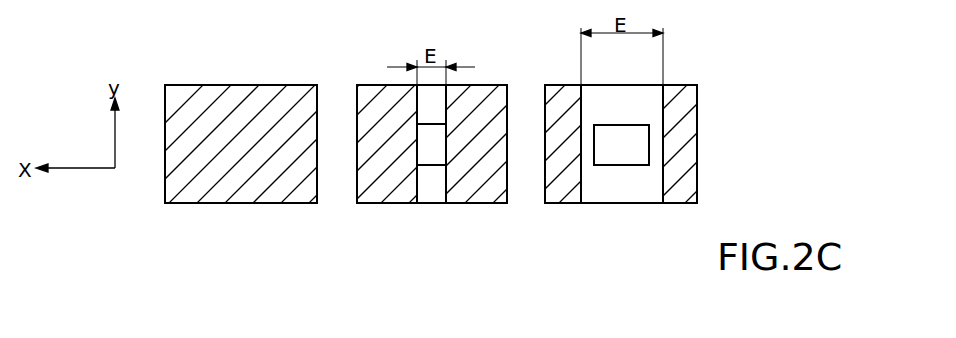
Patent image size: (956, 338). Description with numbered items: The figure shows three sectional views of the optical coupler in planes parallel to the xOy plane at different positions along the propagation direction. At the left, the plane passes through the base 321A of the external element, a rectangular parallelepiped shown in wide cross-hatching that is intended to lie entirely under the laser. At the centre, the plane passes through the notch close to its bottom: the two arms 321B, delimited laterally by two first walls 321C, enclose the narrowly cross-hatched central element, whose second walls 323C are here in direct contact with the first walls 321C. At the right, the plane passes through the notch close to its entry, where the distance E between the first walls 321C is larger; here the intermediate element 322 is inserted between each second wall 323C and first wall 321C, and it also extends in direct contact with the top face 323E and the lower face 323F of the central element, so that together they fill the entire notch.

The base 321A is at (223, 192).
The arms 321B is at (375, 92).
The first walls 321C is at (450, 181).
The intermediate element 322 is at (583, 133).
The second walls 323C is at (446, 150).
The top face 323E is at (627, 119).
The lower face 323F is at (620, 165).